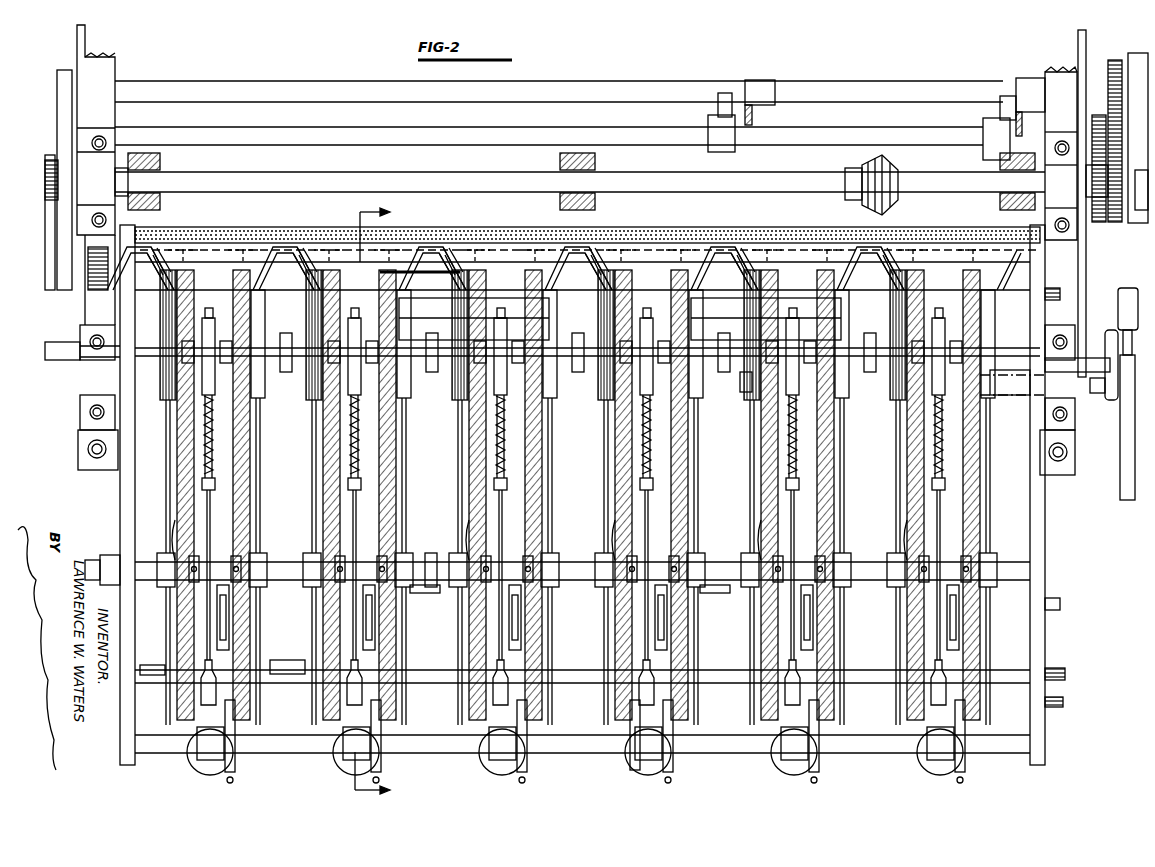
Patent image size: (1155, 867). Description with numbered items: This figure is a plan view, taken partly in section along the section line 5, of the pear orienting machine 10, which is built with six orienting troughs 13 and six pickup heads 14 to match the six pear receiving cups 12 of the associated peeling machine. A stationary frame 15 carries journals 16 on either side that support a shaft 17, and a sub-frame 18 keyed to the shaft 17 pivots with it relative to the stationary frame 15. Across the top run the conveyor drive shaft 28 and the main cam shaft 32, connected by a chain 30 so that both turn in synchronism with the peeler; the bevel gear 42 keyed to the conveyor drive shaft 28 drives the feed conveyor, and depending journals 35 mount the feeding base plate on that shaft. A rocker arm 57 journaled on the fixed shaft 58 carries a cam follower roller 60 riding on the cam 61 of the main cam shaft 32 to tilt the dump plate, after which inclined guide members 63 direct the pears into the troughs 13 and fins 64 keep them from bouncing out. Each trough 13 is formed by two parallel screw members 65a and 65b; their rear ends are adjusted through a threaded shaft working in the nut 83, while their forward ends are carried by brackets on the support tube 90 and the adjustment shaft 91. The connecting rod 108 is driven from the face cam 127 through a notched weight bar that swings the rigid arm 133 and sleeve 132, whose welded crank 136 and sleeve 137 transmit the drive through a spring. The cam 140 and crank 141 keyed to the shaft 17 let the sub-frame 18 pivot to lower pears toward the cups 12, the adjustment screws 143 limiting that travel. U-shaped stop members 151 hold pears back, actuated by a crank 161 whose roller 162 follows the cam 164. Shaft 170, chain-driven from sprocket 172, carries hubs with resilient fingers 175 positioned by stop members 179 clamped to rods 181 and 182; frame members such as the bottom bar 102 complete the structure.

The section line 5 is at (392, 500).
The pear orienting machine 10 is at (1050, 640).
The pear receiving cup 12 is at (633, 768).
The orienting trough 13 is at (209, 282).
The pickup head 14 is at (332, 763).
The stationary frame 15 is at (108, 68).
The journal 16 is at (82, 396).
The shaft 17 is at (42, 375).
The sub-frame 18 is at (118, 489).
The conveyor drive shaft 28 is at (438, 155).
The chain 30 is at (1110, 217).
The main cam shaft 32 is at (930, 113).
The depending journal 35 is at (160, 160).
The bevel gear 42 is at (860, 170).
The rocker arm 57 is at (766, 80).
The shaft 58 is at (918, 90).
The cam follower roller 60 is at (724, 96).
The cam 61 is at (735, 147).
The inclined guide member 63 is at (383, 276).
The fin 64 is at (453, 320).
The screw member 65a is at (177, 448).
The screw member 65b is at (250, 452).
The nut 83 is at (1043, 302).
The support tube 90 is at (286, 674).
The adjustment shaft 91 is at (146, 672).
The bottom bar 102 is at (144, 746).
The connecting rod 108 is at (211, 524).
The face cam 127 is at (1132, 60).
The sleeve 132 is at (734, 376).
The rigid arm 133 is at (1110, 355).
The crank 136 is at (287, 374).
The sleeve 137 is at (1130, 500).
The cam 140 is at (57, 116).
The crank 141 is at (48, 267).
The adjustment screw 143 is at (88, 448).
The stop member 151 is at (371, 633).
The crank 161 is at (1024, 77).
The cam follower roller 162 is at (990, 106).
The cam 164 is at (988, 152).
The shaft 170 is at (429, 552).
The sprocket 172 is at (47, 168).
The resilient finger 175 is at (178, 535).
The stop member 179 is at (430, 587).
The rod 181 is at (173, 487).
The rod 182 is at (457, 480).